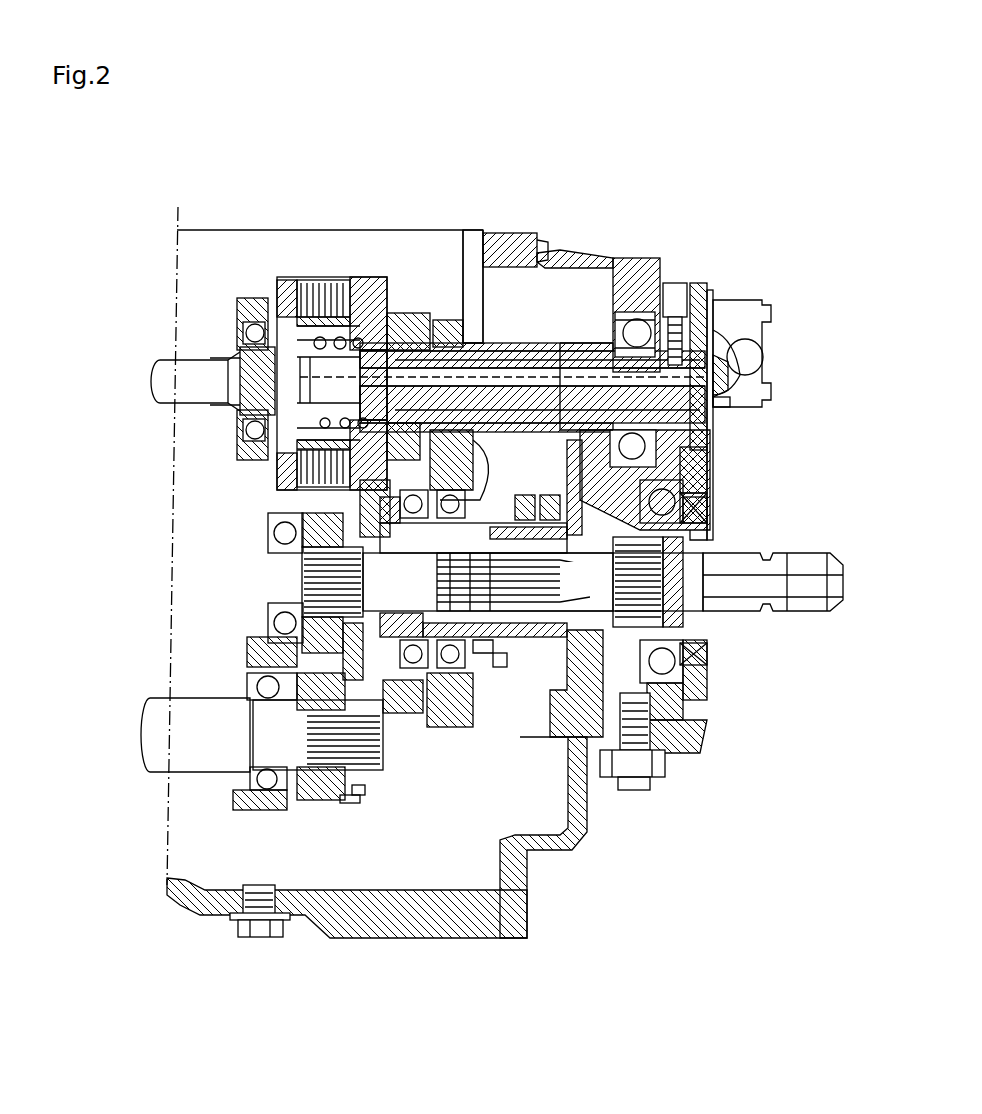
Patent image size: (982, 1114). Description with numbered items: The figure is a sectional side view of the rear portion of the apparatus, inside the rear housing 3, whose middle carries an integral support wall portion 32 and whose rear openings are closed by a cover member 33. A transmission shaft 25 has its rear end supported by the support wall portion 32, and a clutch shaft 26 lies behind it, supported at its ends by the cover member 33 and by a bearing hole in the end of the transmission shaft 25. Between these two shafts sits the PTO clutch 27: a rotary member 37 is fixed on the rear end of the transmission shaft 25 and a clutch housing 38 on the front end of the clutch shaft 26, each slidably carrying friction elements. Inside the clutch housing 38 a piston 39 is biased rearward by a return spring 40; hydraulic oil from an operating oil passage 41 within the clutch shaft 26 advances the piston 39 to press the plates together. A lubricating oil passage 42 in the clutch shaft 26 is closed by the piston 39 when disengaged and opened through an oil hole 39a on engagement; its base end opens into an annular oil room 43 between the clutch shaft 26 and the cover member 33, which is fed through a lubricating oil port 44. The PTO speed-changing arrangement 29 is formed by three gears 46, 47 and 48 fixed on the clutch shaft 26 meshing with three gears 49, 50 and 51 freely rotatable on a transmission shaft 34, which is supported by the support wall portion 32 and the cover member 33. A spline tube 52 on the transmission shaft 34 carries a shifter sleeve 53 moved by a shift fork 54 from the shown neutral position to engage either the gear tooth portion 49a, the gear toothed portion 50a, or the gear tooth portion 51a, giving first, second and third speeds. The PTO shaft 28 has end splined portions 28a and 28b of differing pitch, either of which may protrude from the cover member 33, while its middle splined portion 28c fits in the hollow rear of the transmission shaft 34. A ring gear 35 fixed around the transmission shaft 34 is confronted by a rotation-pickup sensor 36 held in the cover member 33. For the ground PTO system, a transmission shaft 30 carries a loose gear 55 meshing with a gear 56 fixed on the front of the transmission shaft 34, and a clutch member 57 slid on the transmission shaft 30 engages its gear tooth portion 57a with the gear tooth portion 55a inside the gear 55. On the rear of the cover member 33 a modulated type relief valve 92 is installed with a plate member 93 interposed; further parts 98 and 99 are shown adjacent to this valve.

The rear housing 3 is at (403, 917).
The transmission shaft 25 is at (170, 373).
The clutch shaft 26 is at (518, 357).
The PTO clutch 27 is at (338, 252).
The PTO shaft 28 is at (713, 543).
The splined portion 28a is at (807, 580).
The splined portion 28b is at (525, 582).
The middle splined portion 28c is at (682, 609).
The PTO speed-changing arrangement 29 is at (690, 454).
The transmission shaft 30 is at (172, 733).
The support wall portion 32 is at (246, 460).
The cover member 33 is at (672, 722).
The transmission shaft 34 is at (707, 633).
The ring gear 35 is at (680, 700).
The rotation-pickup sensor 36 is at (635, 735).
The rotary member 37 is at (310, 355).
The clutch housing 38 is at (362, 278).
The piston 39 is at (372, 335).
The oil hole 39a is at (365, 374).
The return spring 40 is at (312, 340).
The operating oil passage 41 is at (567, 340).
The lubricating oil passage 42 is at (493, 383).
The annular oil room 43 is at (710, 312).
The lubricating oil port 44 is at (681, 285).
The gear 46 is at (545, 365).
The gear 47 is at (535, 280).
The gear 48 is at (460, 337).
The gear 49 is at (588, 787).
The gear tooth portion 49a is at (556, 727).
The gear 50 is at (447, 728).
The gear toothed portion 50a is at (493, 503).
The gear 51 is at (400, 713).
The gear tooth portion 51a is at (480, 655).
The spline tube 52 is at (501, 668).
The shifter sleeve 53 is at (530, 507).
The shift fork 54 is at (553, 505).
The gear 55 is at (315, 812).
The gear tooth portion 55a is at (258, 640).
The gear 56 is at (272, 530).
The clutch member 57 is at (378, 782).
The gear tooth portion 57a is at (358, 797).
The modulated type relief valve 92 is at (752, 370).
The plate member 93 is at (700, 300).
The nut 98 is at (760, 382).
The seal 99 is at (728, 402).